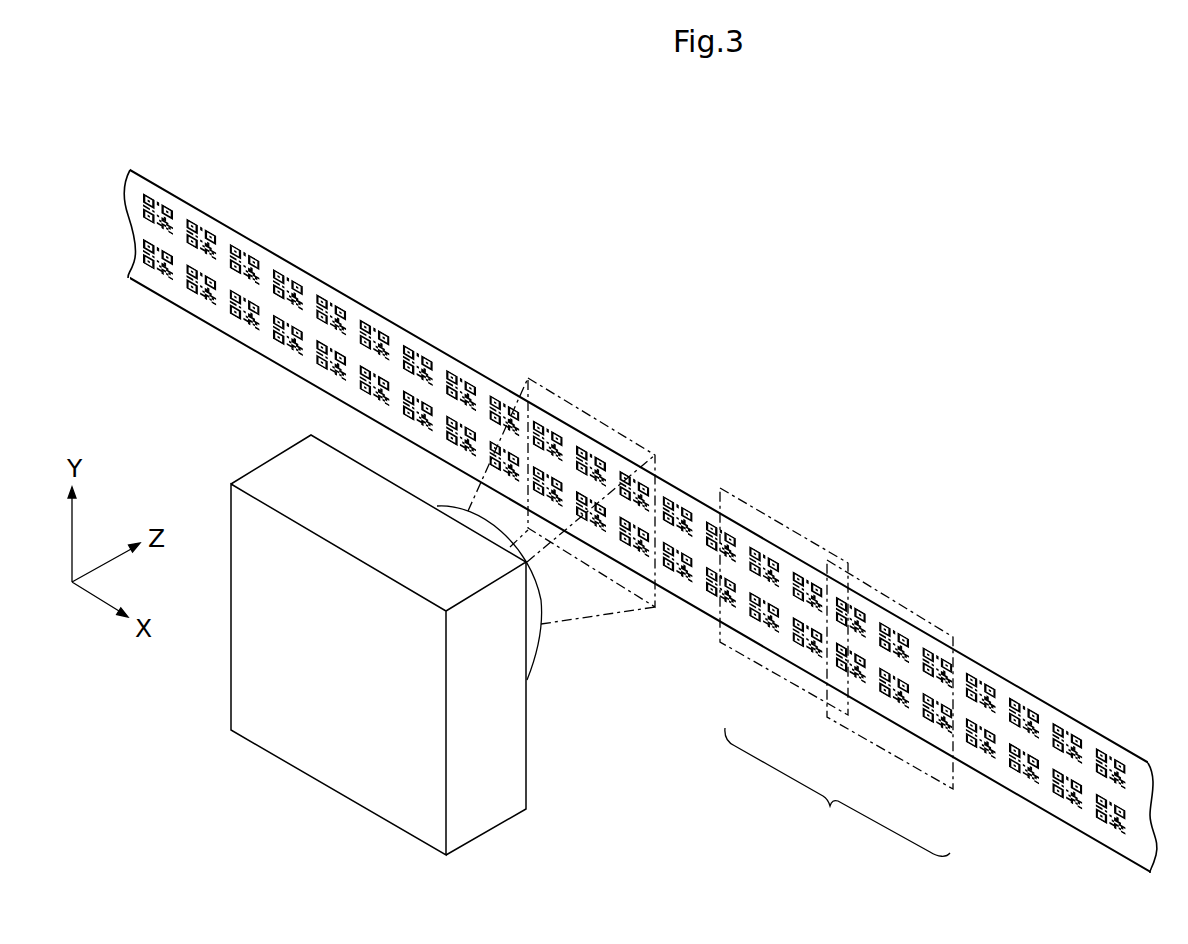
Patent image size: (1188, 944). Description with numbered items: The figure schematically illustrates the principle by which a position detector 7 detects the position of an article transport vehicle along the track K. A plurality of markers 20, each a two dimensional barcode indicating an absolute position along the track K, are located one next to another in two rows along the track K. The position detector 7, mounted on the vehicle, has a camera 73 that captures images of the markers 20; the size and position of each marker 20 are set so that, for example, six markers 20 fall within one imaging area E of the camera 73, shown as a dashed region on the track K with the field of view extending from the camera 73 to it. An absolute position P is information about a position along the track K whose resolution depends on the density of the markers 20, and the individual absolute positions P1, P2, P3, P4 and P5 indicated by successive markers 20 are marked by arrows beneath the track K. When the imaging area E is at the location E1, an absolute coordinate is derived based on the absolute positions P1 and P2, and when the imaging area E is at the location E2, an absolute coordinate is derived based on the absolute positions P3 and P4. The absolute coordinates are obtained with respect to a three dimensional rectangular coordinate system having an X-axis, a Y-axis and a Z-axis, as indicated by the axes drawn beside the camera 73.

The track K is at (747, 454).
The marker 20 is at (412, 353).
The camera 73 is at (345, 632).
The position detector 7 is at (270, 459).
The imaging area E is at (623, 439).
The imaging area E1 is at (773, 519).
The imaging area E2 is at (886, 598).
The absolute position P1 is at (762, 633).
The absolute position P2 is at (805, 658).
The absolute position P3 is at (852, 685).
The absolute position P4 is at (892, 710).
The absolute position P5 is at (937, 735).
The absolute position P is at (837, 792).